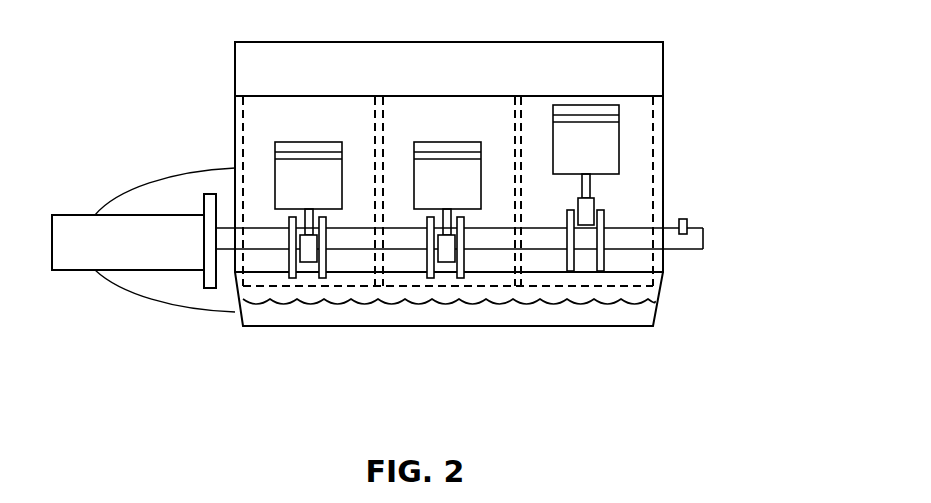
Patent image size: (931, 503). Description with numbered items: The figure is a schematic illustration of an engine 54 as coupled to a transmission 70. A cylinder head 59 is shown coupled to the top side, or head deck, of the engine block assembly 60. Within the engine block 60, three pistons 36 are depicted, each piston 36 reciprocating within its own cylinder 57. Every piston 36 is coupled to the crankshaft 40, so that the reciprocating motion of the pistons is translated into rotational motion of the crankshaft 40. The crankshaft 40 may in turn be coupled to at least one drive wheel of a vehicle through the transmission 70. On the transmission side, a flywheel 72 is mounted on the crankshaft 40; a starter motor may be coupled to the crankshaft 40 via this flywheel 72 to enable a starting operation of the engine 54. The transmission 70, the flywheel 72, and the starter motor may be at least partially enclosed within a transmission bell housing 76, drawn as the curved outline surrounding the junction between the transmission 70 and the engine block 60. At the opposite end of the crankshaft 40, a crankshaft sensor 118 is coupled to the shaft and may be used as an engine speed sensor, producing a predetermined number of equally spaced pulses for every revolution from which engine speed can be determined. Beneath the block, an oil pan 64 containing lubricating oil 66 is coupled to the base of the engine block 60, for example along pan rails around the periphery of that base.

The engine 54 is at (793, 45).
The engine block assembly 60 is at (663, 106).
The cylinder head 59 is at (449, 78).
The cylinder 57 is at (448, 191).
The piston 36 is at (447, 170).
The crankshaft 40 is at (703, 240).
The crankshaft sensor 118 is at (687, 219).
The oil pan 64 is at (658, 292).
The lubricating oil 66 is at (620, 316).
The transmission bell housing 76 is at (188, 310).
The transmission 70 is at (128, 242).
The flywheel 72 is at (212, 194).